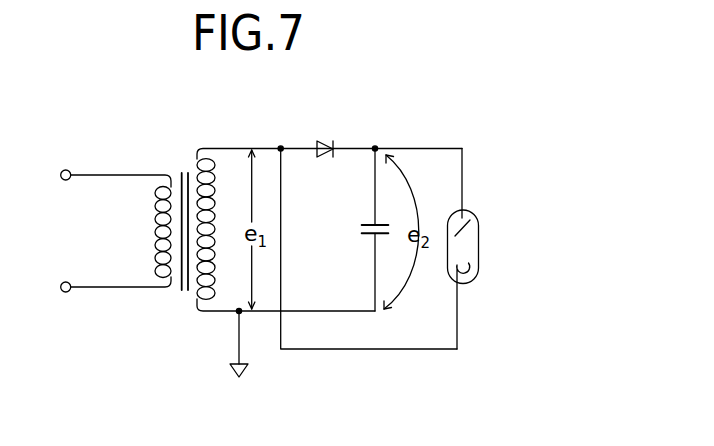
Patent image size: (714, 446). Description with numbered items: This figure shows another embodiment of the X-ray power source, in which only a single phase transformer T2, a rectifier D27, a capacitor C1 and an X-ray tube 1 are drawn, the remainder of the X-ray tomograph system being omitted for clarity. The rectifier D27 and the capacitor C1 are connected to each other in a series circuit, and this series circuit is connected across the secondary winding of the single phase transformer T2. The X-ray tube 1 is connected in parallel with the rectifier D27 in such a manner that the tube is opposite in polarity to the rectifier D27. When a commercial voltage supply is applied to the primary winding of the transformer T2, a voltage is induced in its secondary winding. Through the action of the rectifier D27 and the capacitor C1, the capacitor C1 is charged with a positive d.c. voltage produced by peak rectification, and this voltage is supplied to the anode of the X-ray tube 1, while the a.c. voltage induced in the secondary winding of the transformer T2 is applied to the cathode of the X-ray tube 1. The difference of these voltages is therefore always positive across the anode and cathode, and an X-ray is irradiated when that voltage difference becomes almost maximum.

The X-ray tube 1 is at (478, 269).
The single phase transformer T2 is at (185, 293).
The rectifier D27 is at (331, 129).
The capacitor C1 is at (364, 228).